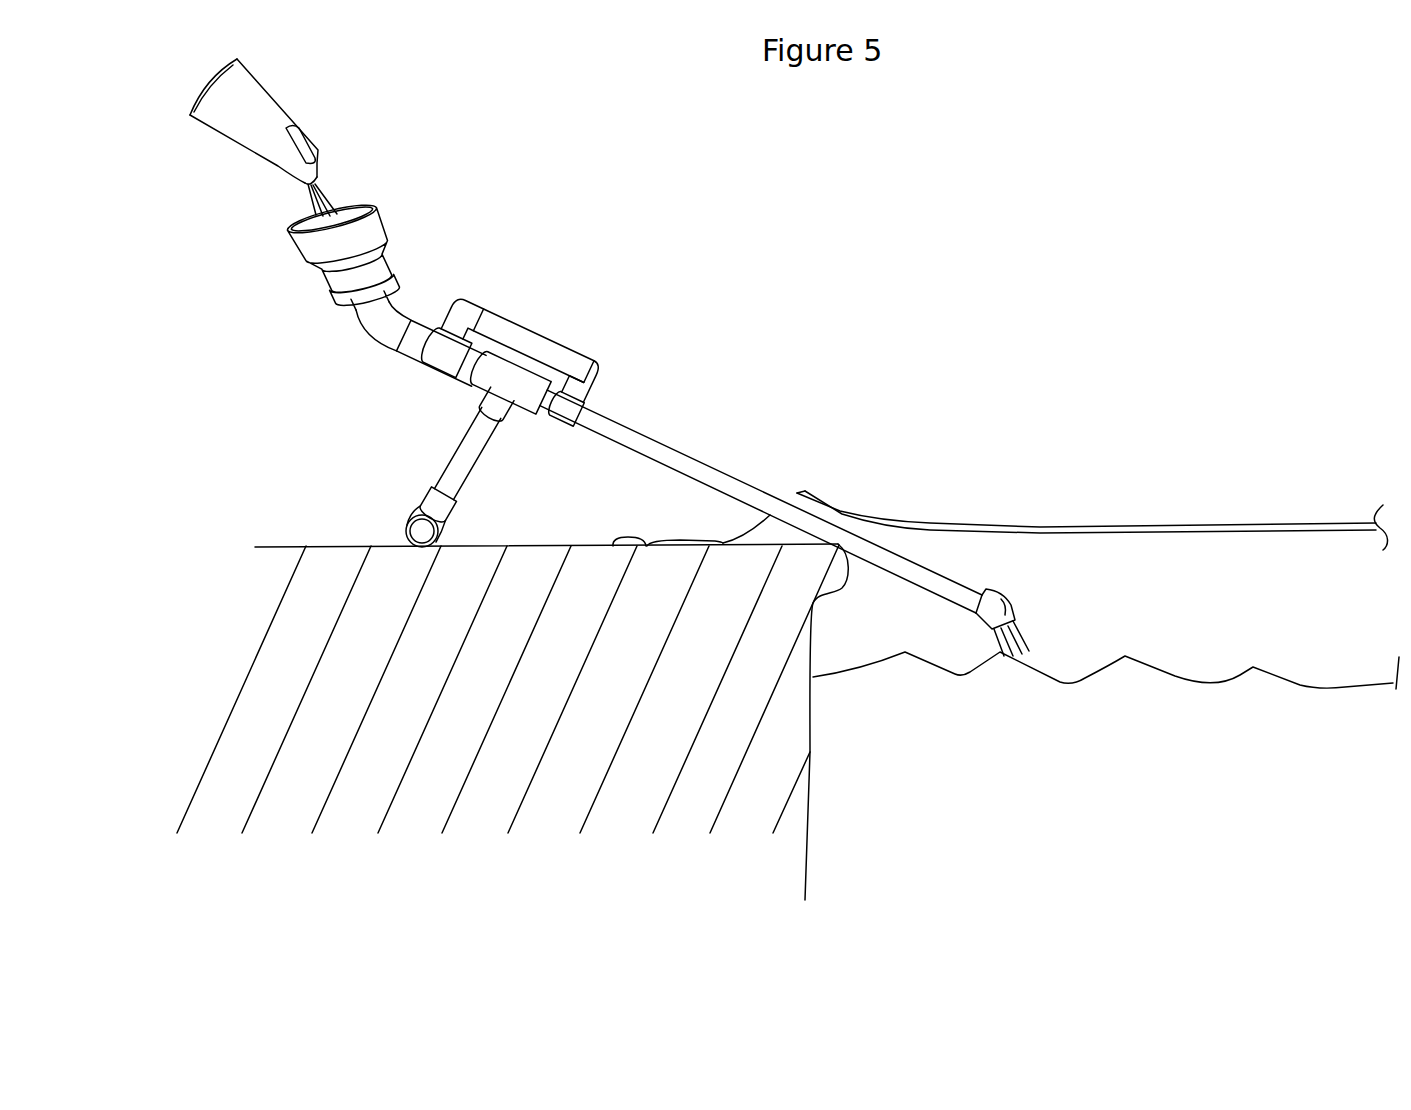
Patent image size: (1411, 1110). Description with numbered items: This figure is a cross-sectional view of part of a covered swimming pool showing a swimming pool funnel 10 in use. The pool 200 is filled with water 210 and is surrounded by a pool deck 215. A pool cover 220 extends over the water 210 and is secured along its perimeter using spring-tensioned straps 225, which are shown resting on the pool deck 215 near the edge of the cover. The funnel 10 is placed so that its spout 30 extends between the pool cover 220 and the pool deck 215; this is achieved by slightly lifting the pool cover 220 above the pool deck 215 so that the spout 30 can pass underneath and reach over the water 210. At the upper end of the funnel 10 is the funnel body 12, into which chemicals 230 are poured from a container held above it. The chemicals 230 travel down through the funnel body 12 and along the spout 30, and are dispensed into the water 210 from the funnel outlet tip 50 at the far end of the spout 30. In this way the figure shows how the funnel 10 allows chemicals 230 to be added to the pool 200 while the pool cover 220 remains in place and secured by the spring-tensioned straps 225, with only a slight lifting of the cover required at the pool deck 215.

The swimming pool funnel 10 is at (458, 262).
The funnel body 12 is at (365, 230).
The spout 30 is at (695, 472).
The funnel outlet tip 50 is at (1003, 611).
The pool 200 is at (1215, 458).
The water 210 is at (1158, 683).
The pool deck 215 is at (536, 550).
The pool cover 220 is at (932, 524).
The spring-tensioned straps 225 is at (667, 538).
The chemicals 230 is at (283, 119).